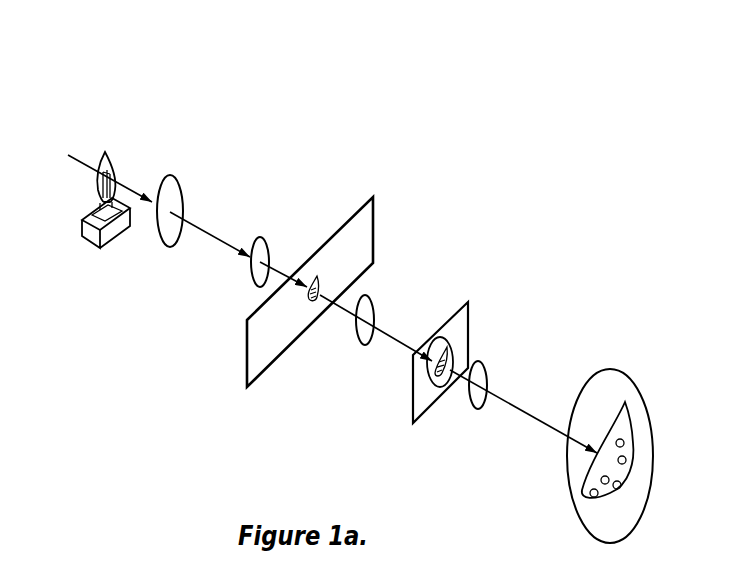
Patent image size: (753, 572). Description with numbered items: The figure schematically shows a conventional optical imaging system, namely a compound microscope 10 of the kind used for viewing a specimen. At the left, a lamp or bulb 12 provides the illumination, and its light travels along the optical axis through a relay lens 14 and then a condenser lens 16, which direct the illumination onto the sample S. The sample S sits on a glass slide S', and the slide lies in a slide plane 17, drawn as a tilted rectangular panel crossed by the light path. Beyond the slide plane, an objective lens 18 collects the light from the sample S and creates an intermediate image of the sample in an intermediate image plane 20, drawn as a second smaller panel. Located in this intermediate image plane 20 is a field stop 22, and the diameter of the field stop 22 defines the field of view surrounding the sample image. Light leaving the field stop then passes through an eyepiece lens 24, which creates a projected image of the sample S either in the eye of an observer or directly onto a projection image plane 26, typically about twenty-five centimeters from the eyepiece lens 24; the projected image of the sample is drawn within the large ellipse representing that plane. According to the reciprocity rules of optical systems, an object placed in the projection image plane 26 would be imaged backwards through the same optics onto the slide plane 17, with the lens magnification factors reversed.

The conventional microscope 10 is at (440, 185).
The lamp or bulb 12 is at (108, 150).
The relay lens 14 is at (170, 176).
The condenser lens 16 is at (265, 238).
The slide plane 17 is at (355, 223).
The objective lens 18 is at (368, 297).
The intermediate image plane 20 is at (413, 393).
The field stop 22 is at (442, 390).
The eyepiece lens 24 is at (487, 370).
The projection image plane 26 is at (573, 488).
The sample S is at (302, 340).
The glass slide S' is at (221, 408).